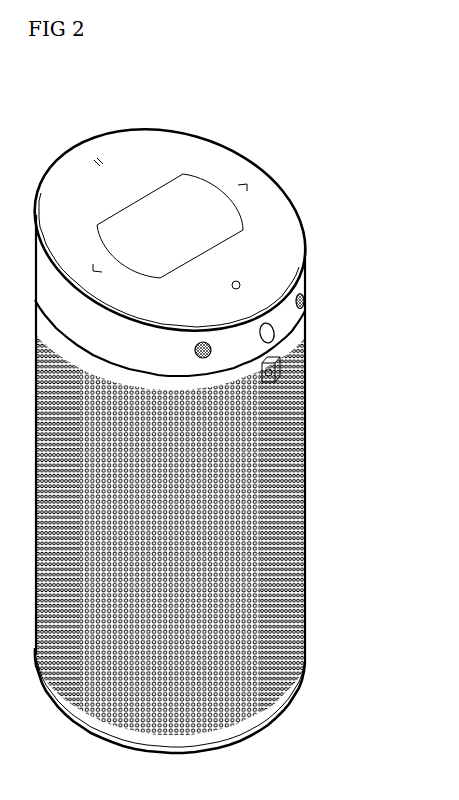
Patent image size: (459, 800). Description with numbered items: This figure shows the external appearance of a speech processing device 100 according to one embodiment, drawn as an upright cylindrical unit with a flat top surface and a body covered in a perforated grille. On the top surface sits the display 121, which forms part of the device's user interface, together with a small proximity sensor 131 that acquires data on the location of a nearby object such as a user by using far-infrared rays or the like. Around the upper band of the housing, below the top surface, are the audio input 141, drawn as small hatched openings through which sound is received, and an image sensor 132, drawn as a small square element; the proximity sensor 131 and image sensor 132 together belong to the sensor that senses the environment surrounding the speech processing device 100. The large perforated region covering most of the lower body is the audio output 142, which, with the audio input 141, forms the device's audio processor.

The speech processing device 100 is at (261, 128).
The display 121 is at (197, 190).
The proximity sensor 131 is at (240, 283).
The audio input 141 is at (305, 305).
The image sensor 132 is at (283, 373).
The audio output 142 is at (307, 517).